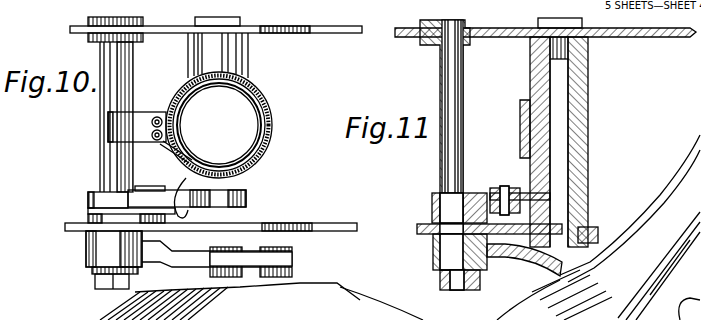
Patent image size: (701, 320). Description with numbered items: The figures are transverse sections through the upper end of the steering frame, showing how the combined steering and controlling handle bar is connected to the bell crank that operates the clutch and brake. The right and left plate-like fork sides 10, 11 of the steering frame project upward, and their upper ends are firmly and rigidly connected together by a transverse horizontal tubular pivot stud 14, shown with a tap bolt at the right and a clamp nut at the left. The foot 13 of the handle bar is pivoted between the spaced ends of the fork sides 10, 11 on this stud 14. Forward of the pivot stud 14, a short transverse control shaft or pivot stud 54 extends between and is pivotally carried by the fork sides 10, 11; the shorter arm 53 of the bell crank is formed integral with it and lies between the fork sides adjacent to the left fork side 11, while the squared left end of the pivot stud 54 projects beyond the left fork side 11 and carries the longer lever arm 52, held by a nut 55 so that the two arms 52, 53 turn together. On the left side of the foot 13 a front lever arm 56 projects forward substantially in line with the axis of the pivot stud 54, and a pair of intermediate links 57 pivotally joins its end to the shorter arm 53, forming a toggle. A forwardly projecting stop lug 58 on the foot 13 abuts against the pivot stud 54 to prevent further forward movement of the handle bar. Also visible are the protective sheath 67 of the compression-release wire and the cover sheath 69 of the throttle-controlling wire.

In FIG. 10, the right fork side 10 is at (345, 33).
In FIG. 11, the right fork side 10 is at (545, 47).
In FIG. 10, the left fork side 11 is at (211, 214).
In FIG. 11, the left fork side 11 is at (417, 228).
In FIG. 10, the foot of the handle bar 13 is at (244, 63).
In FIG. 11, the foot of the handle bar 13 is at (588, 72).
In FIG. 11, the tubular pivot stud 14 is at (572, 102).
In FIG. 10, the lever arm 52 is at (190, 262).
In FIG. 11, the lever arm 52 is at (538, 270).
In FIG. 10, the shorter arm 53 is at (100, 197).
In FIG. 11, the shorter arm 53 is at (457, 196).
In FIG. 10, the pivot stud 54 is at (126, 68).
In FIG. 11, the pivot stud 54 is at (462, 75).
In FIG. 10, the nut 55 is at (95, 281).
In FIG. 11, the nut 55 is at (440, 280).
In FIG. 10, the front lever arm 56 is at (222, 200).
In FIG. 11, the front lever arm 56 is at (553, 197).
In FIG. 10, the intermediate links 57 is at (177, 177).
In FIG. 11, the intermediate links 57 is at (497, 188).
In FIG. 10, the stop lug 58 is at (112, 130).
In FIG. 11, the stop lug 58 is at (508, 126).
In FIG. 10, the protective sheath 67 is at (164, 142).
In FIG. 10, the cover sheath 69 is at (157, 117).